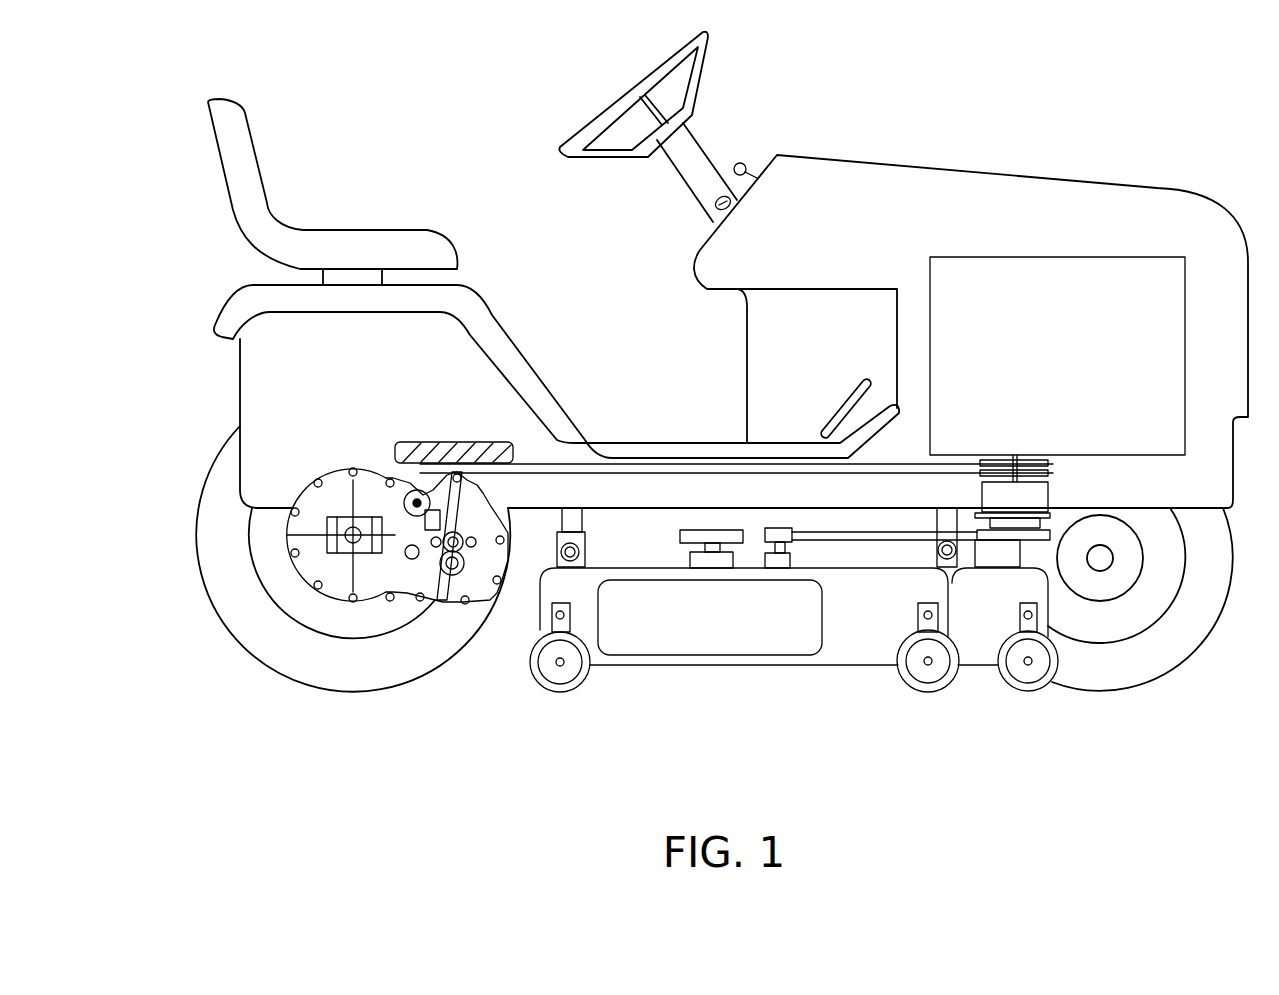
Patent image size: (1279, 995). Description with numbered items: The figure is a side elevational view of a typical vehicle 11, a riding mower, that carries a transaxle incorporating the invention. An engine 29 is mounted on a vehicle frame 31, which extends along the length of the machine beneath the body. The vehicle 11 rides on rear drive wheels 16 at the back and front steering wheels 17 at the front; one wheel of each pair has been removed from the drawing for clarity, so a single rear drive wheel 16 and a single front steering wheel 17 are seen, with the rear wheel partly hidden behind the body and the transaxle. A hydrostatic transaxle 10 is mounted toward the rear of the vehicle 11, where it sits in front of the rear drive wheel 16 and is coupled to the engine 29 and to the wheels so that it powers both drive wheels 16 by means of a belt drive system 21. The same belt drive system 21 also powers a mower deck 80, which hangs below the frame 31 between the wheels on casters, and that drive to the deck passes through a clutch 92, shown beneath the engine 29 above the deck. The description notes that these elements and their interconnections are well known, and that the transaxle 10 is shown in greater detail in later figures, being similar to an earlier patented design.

The hydrostatic transaxle 10 is at (338, 446).
The vehicle 11 is at (1018, 120).
The rear drive wheels 16 is at (273, 670).
The front steering wheels 17 is at (1137, 686).
The belt drive system 21 is at (812, 530).
The engine 29 is at (1042, 376).
The vehicle frame 31 is at (600, 490).
The mower deck 80 is at (852, 667).
The clutch 92 is at (1040, 495).